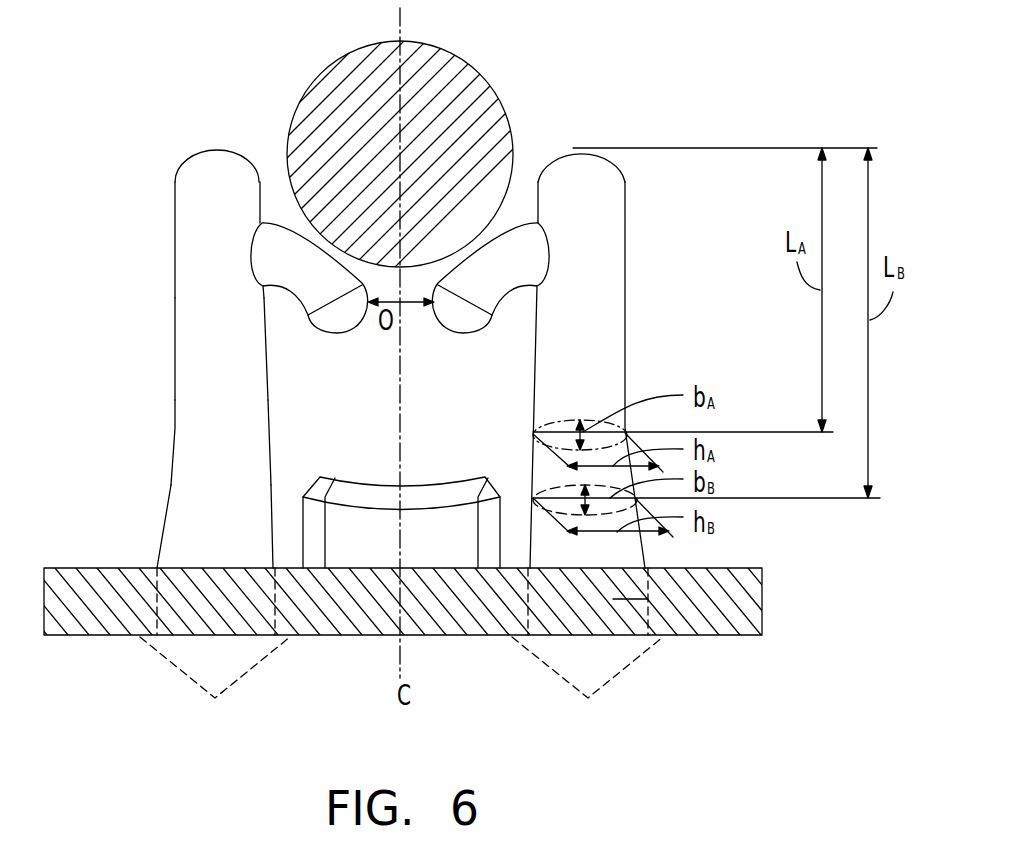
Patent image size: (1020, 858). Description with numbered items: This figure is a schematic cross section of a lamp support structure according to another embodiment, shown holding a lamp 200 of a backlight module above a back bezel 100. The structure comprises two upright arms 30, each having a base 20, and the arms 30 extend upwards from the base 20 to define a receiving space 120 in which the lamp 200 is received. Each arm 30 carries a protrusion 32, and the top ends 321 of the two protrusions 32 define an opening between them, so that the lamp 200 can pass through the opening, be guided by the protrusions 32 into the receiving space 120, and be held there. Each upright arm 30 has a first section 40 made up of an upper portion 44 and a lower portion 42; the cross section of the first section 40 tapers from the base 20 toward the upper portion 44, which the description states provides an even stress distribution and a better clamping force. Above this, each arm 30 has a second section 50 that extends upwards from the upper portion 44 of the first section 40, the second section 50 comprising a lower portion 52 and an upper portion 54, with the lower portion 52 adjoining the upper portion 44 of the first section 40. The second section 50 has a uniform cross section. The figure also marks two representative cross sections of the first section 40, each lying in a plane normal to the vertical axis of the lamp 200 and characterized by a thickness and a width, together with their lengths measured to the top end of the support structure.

The lamp 200 is at (316, 80).
The upright arm 30 is at (608, 336).
The protrusion 32 is at (508, 260).
The top end of protrusion 321 is at (453, 317).
The second section 50 is at (166, 275).
The upper portion of second section 54 is at (152, 167).
The lower portion of second section 52 is at (188, 349).
The first section 40 is at (179, 549).
The upper portion of first section 44 is at (152, 400).
The lower portion of first section 42 is at (200, 591).
The back bezel 100 is at (760, 605).
The base 20 is at (647, 599).
The receiving space 120 is at (407, 438).